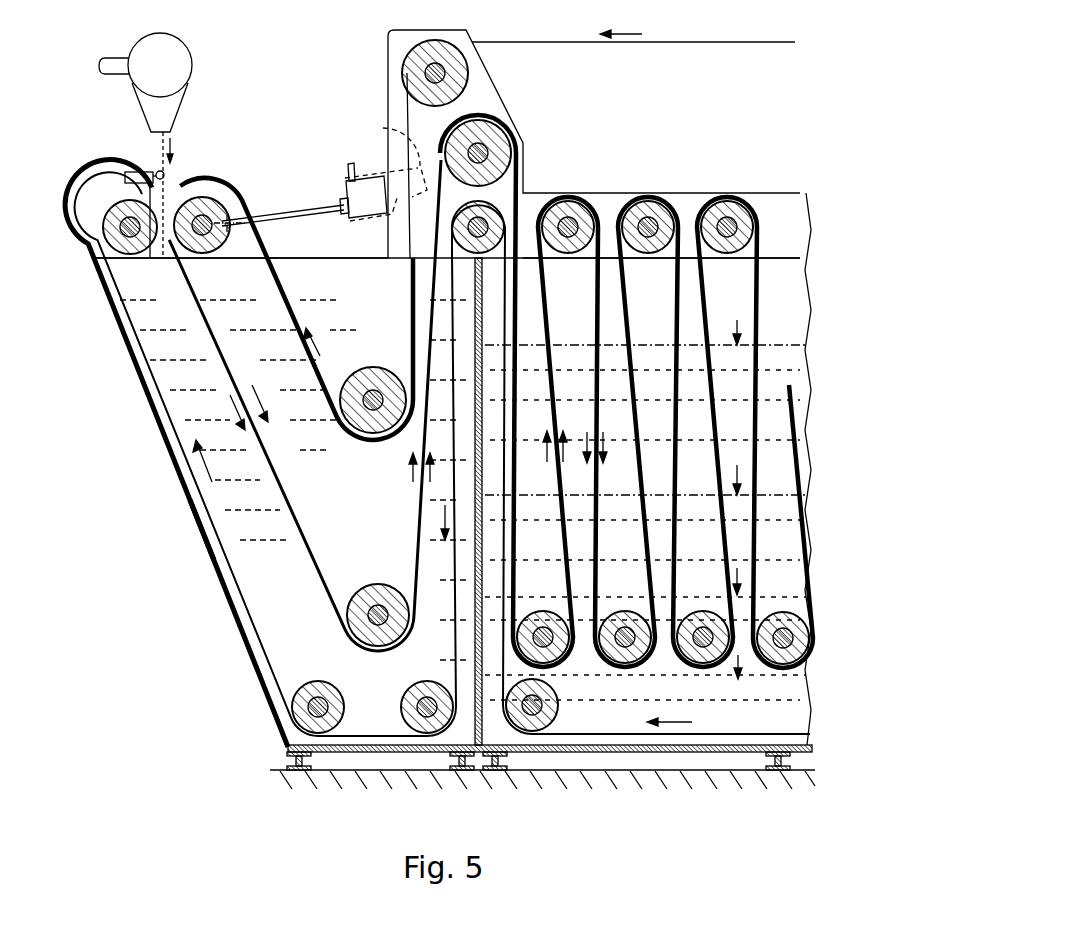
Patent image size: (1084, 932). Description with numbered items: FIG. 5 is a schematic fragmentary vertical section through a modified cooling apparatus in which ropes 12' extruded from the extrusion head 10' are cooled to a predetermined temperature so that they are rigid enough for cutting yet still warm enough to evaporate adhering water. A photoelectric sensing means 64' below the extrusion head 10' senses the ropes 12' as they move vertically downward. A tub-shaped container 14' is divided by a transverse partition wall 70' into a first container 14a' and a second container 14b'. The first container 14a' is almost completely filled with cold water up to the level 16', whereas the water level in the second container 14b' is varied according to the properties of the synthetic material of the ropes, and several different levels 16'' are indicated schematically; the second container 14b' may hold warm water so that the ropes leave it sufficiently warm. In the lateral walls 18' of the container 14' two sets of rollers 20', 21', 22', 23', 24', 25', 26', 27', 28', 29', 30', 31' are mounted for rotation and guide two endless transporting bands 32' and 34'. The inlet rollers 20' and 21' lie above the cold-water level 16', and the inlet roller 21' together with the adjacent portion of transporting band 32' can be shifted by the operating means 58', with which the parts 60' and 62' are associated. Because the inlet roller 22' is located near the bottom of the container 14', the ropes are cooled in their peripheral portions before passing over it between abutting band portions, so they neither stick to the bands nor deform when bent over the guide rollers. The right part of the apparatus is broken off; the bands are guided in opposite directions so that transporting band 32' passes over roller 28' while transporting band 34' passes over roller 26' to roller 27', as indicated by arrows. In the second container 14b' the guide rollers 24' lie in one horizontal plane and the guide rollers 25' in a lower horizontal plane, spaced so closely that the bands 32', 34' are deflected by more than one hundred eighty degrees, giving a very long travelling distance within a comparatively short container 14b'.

The extrusion head 10' is at (167, 82).
The ropes 12' is at (191, 191).
The tub-shaped container 14' is at (176, 453).
The first container 14a' is at (447, 501).
The second container 14b' is at (648, 469).
The level of cold water 16' is at (442, 454).
The water levels 16'' is at (626, 397).
The lateral walls 18' is at (447, 240).
The inlet roller 20' is at (123, 199).
The inlet roller 21' is at (213, 204).
The inlet roller 22' is at (376, 598).
The roller 23' is at (501, 147).
The guide rollers 24' is at (648, 208).
The guide rollers 25' is at (663, 658).
The roller 26' is at (545, 706).
The roller 27' is at (504, 208).
The roller 28' is at (463, 73).
The roller 29' is at (373, 382).
The roller 30' is at (409, 705).
The roller 31' is at (282, 706).
The transporting band 32' is at (633, 22).
The transporting band 34' is at (191, 542).
The operating means 58' is at (366, 180).
The pivoted position of actuator 60' is at (386, 168).
The piston rod 62' is at (281, 205).
The photoelectric sensing means 64' is at (144, 159).
The transverse partition wall 70' is at (542, 780).